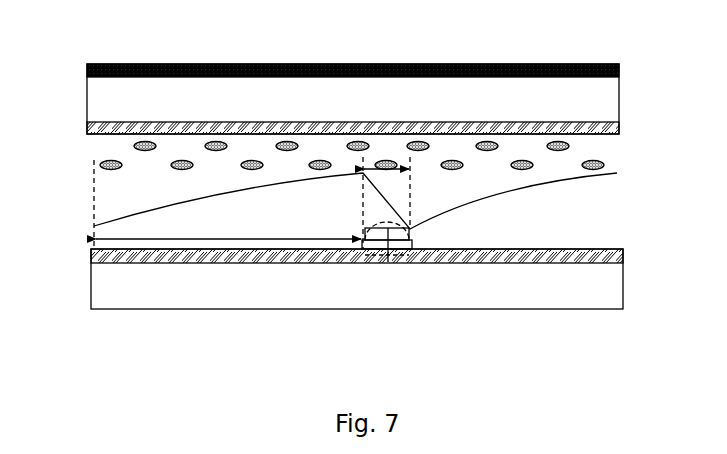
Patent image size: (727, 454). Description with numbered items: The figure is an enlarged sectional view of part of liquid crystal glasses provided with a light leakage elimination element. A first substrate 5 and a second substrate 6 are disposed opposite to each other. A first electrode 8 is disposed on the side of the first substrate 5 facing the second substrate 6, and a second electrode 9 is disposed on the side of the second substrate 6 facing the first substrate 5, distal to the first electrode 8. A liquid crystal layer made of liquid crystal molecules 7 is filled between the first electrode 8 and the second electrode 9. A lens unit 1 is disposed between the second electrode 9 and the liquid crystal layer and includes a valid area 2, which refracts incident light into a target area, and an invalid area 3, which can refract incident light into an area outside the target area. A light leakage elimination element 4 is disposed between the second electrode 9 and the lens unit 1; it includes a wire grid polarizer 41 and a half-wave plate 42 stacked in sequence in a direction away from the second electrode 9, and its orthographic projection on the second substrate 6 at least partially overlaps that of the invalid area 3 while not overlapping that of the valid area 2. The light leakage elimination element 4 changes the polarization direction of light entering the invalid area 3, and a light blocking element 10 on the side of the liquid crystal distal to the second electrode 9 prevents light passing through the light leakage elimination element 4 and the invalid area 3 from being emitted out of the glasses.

The lens unit 1 is at (94, 203).
The valid area 2 is at (227, 204).
The invalid area 3 is at (386, 202).
The light leakage elimination element 4 is at (413, 233).
The wire grid polarizer 41 is at (373, 243).
The half-wave plate 42 is at (388, 262).
The first substrate 5 is at (518, 88).
The second substrate 6 is at (563, 297).
The liquid crystal molecules 7 is at (605, 163).
The first electrode 8 is at (88, 129).
The second electrode 9 is at (102, 254).
The light blocking element 10 is at (372, 67).